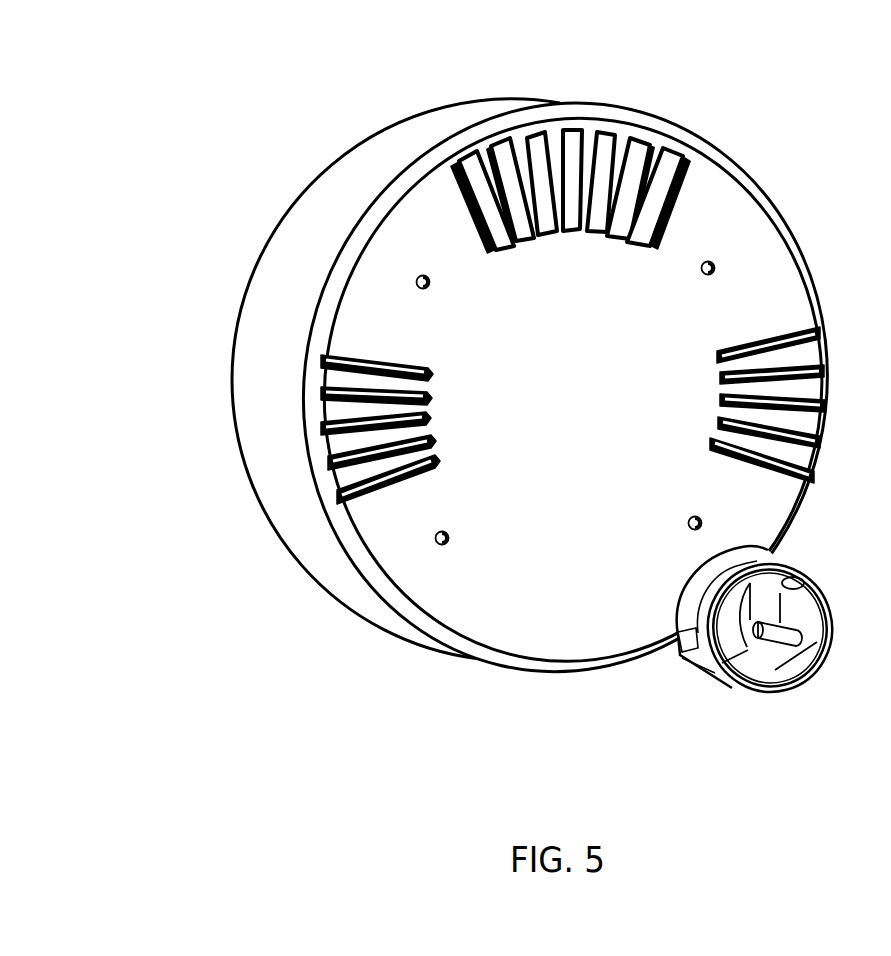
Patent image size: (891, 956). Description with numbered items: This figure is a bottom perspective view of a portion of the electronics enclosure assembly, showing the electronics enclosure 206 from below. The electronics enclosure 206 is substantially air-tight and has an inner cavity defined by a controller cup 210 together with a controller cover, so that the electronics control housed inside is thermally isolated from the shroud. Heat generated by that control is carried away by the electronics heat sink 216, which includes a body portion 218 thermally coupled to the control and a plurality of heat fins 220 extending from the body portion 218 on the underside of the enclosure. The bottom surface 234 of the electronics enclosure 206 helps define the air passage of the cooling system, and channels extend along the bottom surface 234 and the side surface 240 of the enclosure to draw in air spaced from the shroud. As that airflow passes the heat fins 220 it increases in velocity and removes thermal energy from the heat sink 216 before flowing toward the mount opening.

The electronics enclosure 206 is at (708, 148).
The controller cup 210 is at (767, 198).
The electronics heat sink 216 is at (545, 130).
The body portion 218 is at (512, 138).
The heat fins 220 is at (637, 150).
The bottom surface 234 is at (495, 635).
The side surface 240 is at (253, 395).